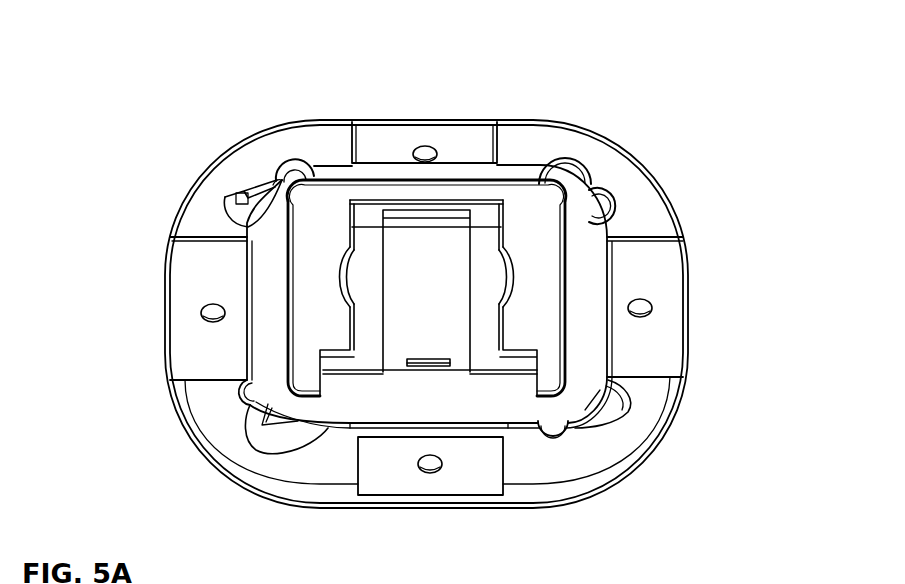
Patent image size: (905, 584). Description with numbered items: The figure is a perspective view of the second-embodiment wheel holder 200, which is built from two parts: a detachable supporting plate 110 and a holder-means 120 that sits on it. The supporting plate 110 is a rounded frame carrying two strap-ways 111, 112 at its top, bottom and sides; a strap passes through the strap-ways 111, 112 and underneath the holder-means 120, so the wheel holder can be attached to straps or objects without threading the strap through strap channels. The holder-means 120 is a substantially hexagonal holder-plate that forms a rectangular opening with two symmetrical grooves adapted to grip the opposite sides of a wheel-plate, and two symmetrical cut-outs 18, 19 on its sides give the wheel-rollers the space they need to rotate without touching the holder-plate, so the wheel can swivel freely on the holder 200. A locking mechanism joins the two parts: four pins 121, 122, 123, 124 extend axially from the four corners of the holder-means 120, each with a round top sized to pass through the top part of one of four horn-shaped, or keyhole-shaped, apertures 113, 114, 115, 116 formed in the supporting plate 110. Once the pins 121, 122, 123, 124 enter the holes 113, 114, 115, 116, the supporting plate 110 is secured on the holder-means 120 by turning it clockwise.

The holder 200 is at (664, 111).
The detachable supporting plate 110 is at (193, 216).
The strap-way 111 is at (458, 133).
The strap-way 112 is at (183, 355).
The horn-shaped aperture 113 is at (237, 209).
The horn-shaped aperture 114 is at (570, 170).
The horn-shaped aperture 115 is at (608, 410).
The horn-shaped aperture 116 is at (288, 442).
The holder-means 120 is at (383, 183).
The pin 121 is at (253, 392).
The pin 122 is at (294, 168).
The pin 123 is at (593, 200).
The pin 124 is at (557, 420).
The cut-out 18 is at (340, 278).
The cut-out 19 is at (512, 278).